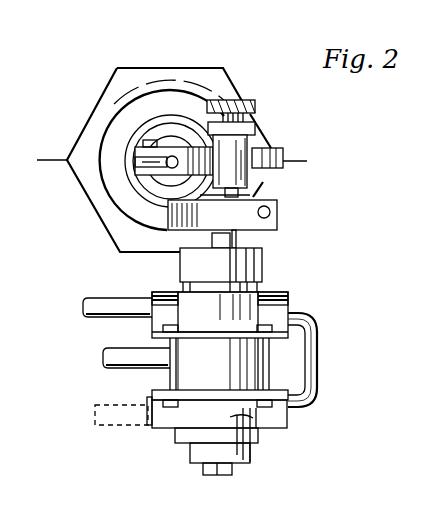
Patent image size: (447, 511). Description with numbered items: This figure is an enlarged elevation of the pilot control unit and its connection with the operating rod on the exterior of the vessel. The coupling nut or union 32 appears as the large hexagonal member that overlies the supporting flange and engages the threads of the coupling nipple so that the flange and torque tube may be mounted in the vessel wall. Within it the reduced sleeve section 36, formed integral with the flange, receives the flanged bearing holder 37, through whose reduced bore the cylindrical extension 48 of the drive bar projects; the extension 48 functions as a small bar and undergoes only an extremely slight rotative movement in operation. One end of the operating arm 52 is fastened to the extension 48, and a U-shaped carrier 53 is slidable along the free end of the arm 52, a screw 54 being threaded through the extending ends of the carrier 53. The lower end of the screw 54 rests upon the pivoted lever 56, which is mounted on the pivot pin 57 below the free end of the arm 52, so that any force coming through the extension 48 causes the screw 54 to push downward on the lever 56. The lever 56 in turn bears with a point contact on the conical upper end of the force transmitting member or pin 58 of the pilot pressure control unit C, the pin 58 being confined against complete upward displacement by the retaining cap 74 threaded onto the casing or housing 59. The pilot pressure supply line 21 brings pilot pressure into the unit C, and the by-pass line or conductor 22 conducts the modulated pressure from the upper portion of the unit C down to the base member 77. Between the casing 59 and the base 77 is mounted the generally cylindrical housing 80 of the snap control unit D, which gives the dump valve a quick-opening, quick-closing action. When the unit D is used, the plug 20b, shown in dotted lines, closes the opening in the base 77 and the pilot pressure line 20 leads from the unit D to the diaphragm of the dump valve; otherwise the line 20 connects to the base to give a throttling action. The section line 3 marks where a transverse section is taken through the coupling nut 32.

The section line 3- 3 is at (28, 162).
The coupling nut or union 32 is at (173, 68).
The reduced sleeve section 36 is at (186, 108).
The flanged bearing holder 37 is at (170, 157).
The cylindrical extension 48 is at (160, 170).
The screw 54 is at (255, 101).
The operating arm 52 is at (278, 148).
The U-shaped carrier 53 is at (236, 168).
The pivoted lever 56 is at (277, 227).
The pivot pin 57 is at (272, 213).
The force transmitting or operating member or pin 58 is at (233, 240).
The casing or housing 59 is at (190, 288).
The retaining cap 74 is at (262, 267).
The pilot pressure control unit C is at (282, 293).
The pilot pressure supply line 21 is at (120, 303).
The generally cylindrical housing 80 is at (193, 348).
The pilot pressure line 20 is at (113, 368).
The plug 20b is at (148, 402).
The base member 77 is at (258, 430).
The snap control unit D is at (272, 358).
The by-pass line 22 is at (318, 390).